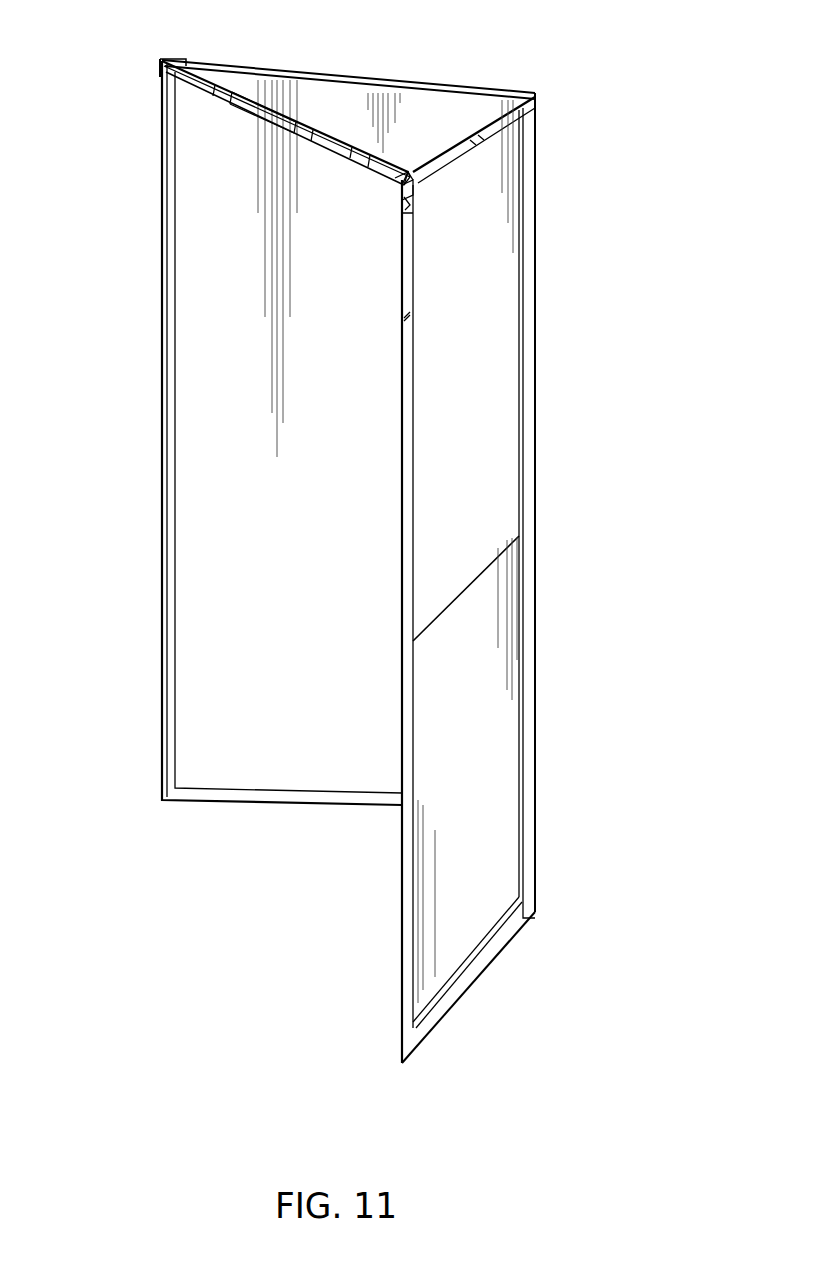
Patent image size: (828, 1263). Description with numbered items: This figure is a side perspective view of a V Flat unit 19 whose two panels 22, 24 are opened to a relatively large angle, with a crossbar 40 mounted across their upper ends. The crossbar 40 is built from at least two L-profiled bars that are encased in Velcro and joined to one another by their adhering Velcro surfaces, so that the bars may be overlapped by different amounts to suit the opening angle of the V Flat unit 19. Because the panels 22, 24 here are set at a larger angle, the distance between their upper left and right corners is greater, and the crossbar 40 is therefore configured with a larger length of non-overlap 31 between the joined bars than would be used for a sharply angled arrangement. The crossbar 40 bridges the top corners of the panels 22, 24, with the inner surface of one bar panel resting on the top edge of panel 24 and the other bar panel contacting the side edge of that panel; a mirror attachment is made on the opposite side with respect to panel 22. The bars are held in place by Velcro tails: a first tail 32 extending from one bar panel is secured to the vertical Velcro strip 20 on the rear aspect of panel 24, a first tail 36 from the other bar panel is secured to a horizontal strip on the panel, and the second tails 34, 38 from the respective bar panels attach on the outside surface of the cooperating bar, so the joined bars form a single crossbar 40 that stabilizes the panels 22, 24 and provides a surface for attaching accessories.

The V Flat unit 19 is at (371, 535).
The vertical Velcro strip 20 is at (428, 1025).
The panel 22 is at (200, 270).
The panel 24 is at (508, 785).
The non-overlap segment 31 is at (286, 94).
The first tail 32 is at (413, 205).
The second tail 34 is at (183, 58).
The first tail 36 is at (414, 176).
The second tail 38 is at (162, 72).
The crossbar 40 is at (262, 118).